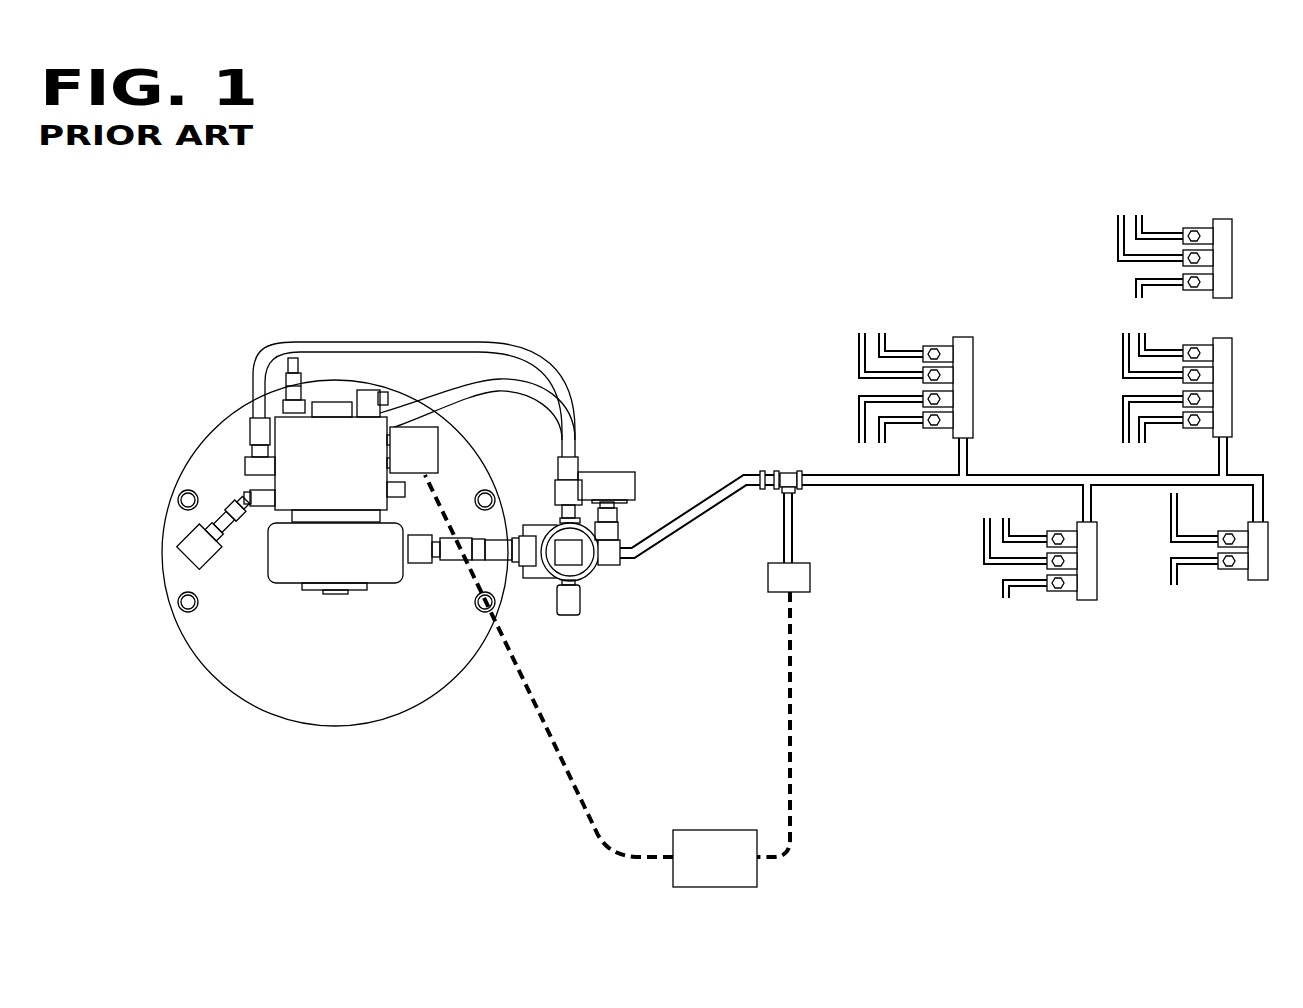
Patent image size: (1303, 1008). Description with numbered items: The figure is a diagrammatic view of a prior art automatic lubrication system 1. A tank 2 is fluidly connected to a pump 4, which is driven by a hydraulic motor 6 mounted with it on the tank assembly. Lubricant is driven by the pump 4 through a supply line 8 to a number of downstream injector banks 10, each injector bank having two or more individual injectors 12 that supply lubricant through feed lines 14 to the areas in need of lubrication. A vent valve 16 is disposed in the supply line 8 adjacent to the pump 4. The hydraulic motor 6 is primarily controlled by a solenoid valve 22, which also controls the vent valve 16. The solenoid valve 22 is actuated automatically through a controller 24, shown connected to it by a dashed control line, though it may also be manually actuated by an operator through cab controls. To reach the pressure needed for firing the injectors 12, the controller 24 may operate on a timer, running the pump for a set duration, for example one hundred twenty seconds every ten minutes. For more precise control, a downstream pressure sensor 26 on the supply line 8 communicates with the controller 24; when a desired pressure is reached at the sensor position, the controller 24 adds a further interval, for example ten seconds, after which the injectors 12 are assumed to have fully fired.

The automatic lubrication system 1 is at (668, 211).
The tank 2 is at (330, 727).
The pump 4 is at (292, 572).
The hydraulic motor 6 is at (335, 422).
The supply line 8 is at (742, 480).
The injector banks 10 is at (962, 337).
The injectors 12 is at (933, 350).
The feed lines 14 is at (860, 354).
The vent valve 16 is at (582, 570).
The solenoid valve 22 is at (427, 437).
The controller 24 is at (700, 873).
The pressure sensor 26 is at (778, 589).